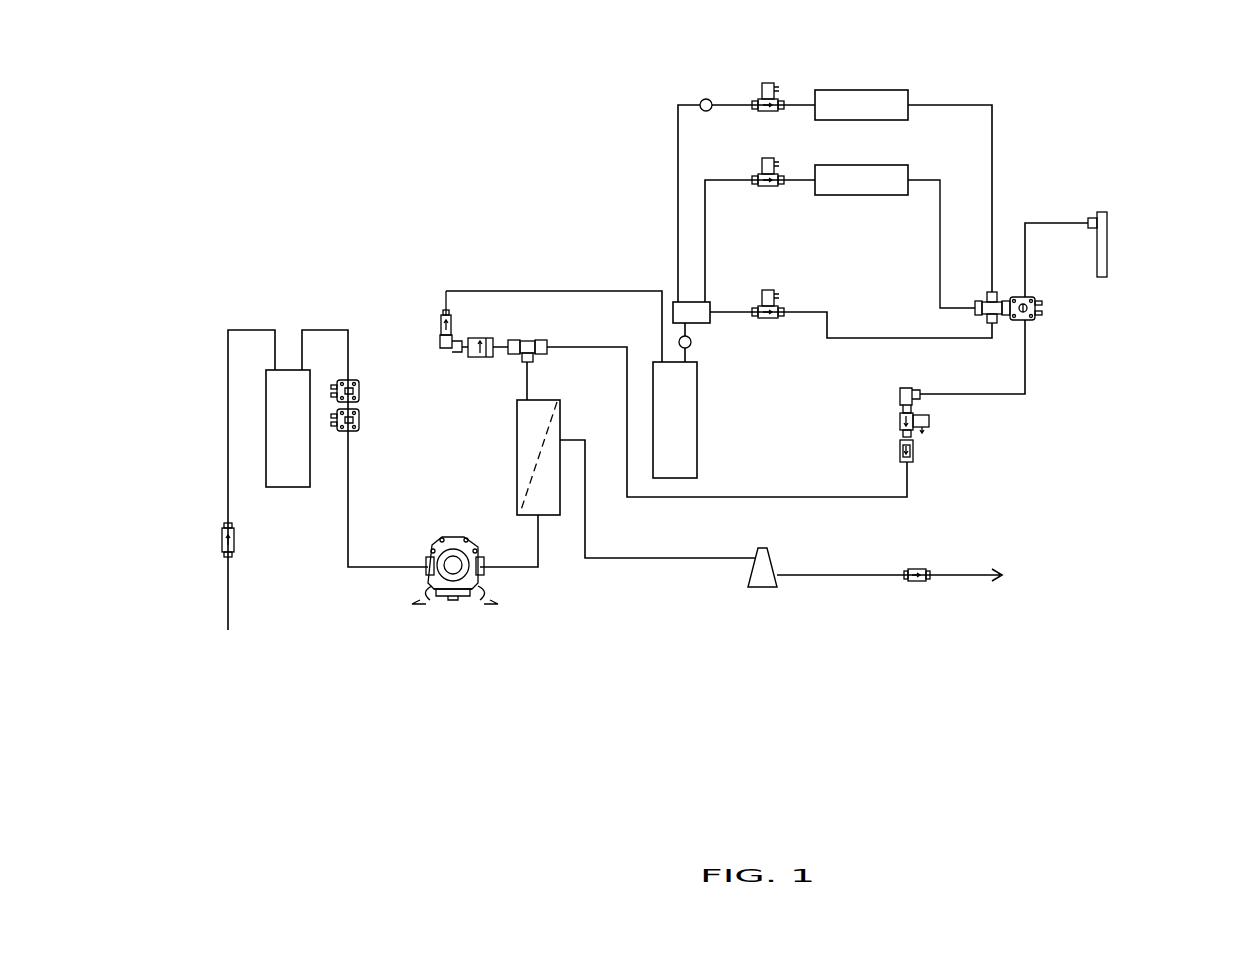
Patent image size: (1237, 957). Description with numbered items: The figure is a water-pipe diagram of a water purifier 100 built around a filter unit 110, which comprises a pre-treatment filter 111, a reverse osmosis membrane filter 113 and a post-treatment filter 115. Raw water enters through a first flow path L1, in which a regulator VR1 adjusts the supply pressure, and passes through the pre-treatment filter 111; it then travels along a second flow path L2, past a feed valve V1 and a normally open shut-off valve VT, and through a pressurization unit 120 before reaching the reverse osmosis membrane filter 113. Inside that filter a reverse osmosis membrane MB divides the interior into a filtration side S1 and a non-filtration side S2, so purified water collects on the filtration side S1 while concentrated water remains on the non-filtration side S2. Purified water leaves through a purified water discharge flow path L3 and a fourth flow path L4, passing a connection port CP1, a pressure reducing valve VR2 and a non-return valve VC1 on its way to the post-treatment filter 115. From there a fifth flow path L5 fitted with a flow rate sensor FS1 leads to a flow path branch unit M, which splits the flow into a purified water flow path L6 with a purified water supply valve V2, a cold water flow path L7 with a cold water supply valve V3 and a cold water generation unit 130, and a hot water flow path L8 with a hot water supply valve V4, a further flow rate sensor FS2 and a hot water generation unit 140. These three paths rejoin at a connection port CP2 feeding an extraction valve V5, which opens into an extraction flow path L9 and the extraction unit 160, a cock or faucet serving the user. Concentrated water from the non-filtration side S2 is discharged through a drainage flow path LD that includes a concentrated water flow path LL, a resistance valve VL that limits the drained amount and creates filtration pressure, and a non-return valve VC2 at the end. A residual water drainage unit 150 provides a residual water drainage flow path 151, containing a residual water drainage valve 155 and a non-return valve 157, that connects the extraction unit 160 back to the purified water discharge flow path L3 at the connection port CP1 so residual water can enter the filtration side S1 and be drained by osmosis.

The water purifier 100 is at (300, 205).
The filter unit 110 is at (386, 132).
The pre-treatment filter 111 is at (288, 487).
The reverse osmosis membrane filter 113 is at (554, 518).
The post-treatment filter 115 is at (698, 402).
The pressurization unit 120 is at (451, 599).
The cold water generation unit 130 is at (878, 167).
The hot water generation unit 140 is at (878, 90).
The residual water drainage unit 150 is at (484, 132).
The residual water drainage flow path 151 is at (806, 496).
The residual water drainage valve 155 is at (930, 425).
The non-return valve 157 is at (916, 452).
The extraction unit 160 is at (1108, 228).
The first flow path L1 is at (228, 420).
The second flow path L2 is at (354, 567).
The purified water discharge flow path L3 is at (520, 386).
The fourth flow path L4 is at (530, 290).
The fifth flow path L5 is at (692, 328).
The purified water flow path L6 is at (872, 338).
The cold water flow path L7 is at (740, 184).
The hot water flow path L8 is at (740, 100).
The extraction flow path L9 is at (1064, 221).
The concentrated water flow path LL is at (698, 562).
The drainage flow path LD is at (960, 578).
The feed valve V1 is at (360, 386).
The purified water supply valve V2 is at (768, 290).
The cold water supply valve V3 is at (768, 158).
The hot water supply valve V4 is at (768, 83).
The extraction valve V5 is at (1042, 304).
The shut-off valve VT is at (360, 420).
The resistance valve VL is at (772, 558).
The non-return valve VC1 is at (440, 332).
The non-return valve VC2 is at (915, 582).
The regulator VR1 is at (221, 546).
The pressure reducing valve VR2 is at (477, 355).
The connection port CP1 is at (525, 341).
The connection port CP2 is at (986, 300).
The flow rate sensor FS1 is at (692, 346).
The flow rate sensor FS2 is at (706, 98).
The flow path branch unit M is at (673, 300).
The reverse osmosis membrane MB is at (540, 441).
The filtration side S1 is at (535, 455).
The non-filtration side S2 is at (540, 490).